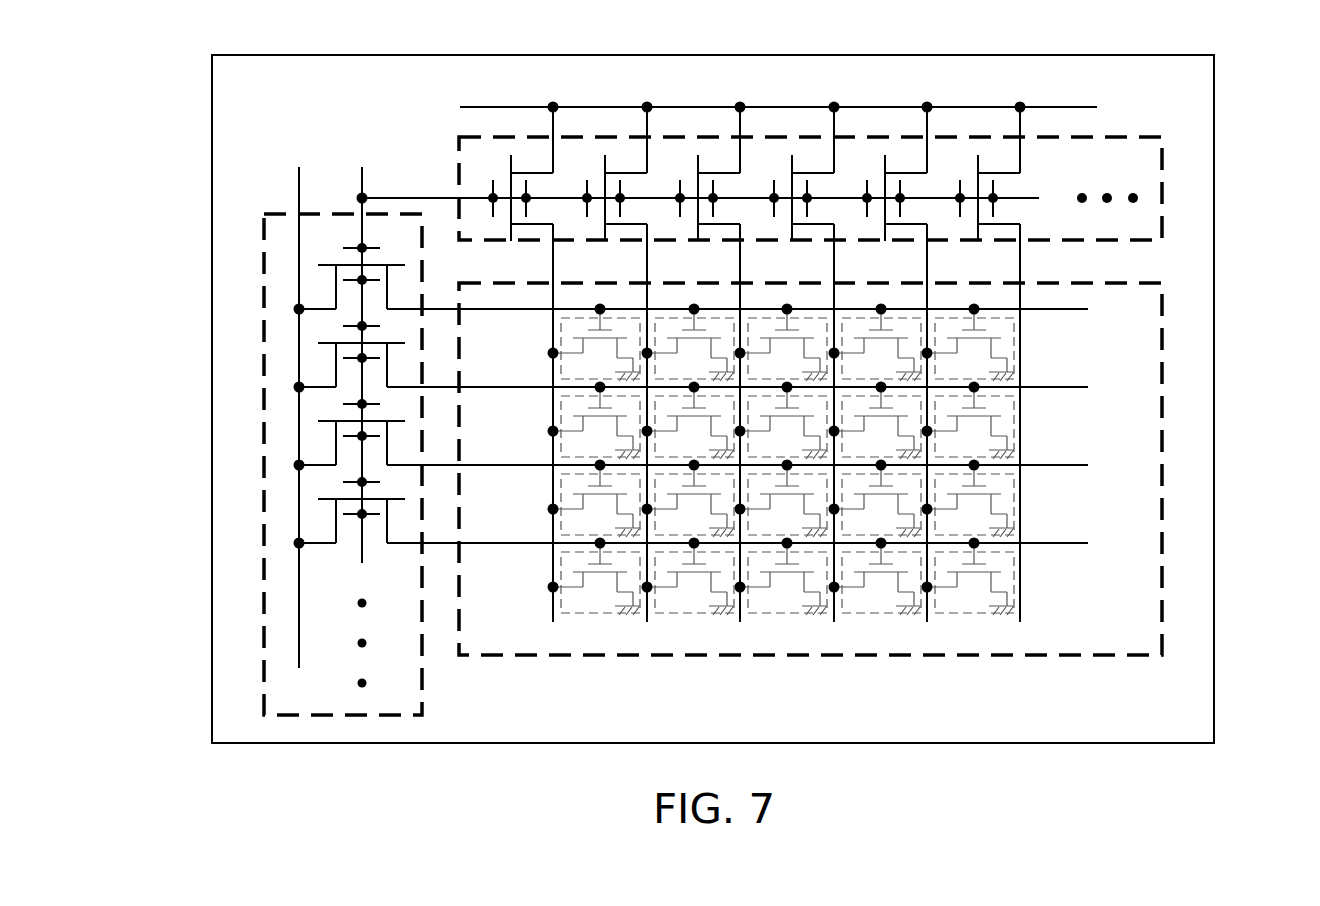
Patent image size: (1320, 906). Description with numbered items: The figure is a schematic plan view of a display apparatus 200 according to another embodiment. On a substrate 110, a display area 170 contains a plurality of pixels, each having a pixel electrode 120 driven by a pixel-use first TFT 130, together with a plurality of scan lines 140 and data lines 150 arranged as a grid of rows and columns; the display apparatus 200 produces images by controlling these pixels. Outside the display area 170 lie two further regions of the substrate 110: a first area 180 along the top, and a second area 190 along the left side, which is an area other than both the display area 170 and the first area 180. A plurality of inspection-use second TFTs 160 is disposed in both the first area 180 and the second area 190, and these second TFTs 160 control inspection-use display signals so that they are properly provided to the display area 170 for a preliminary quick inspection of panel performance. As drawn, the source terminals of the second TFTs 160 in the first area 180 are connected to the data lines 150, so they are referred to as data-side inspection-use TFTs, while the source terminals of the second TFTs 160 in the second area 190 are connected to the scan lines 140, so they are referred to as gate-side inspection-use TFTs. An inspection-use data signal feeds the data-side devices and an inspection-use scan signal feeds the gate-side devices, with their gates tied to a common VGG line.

The display apparatus 200 is at (153, 59).
The substrate 110 is at (1214, 400).
The pixel electrode 120 is at (630, 592).
The first TFT 130 is at (574, 557).
The scan line 140 is at (760, 426).
The data line 150 is at (786, 438).
The second TFT 160 is at (1020, 147).
The display area 170 is at (1128, 607).
The first area 180 is at (1123, 147).
The second area 190 is at (302, 703).